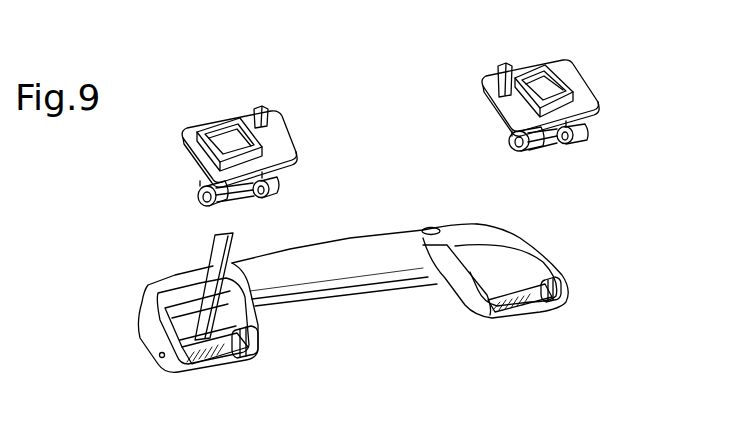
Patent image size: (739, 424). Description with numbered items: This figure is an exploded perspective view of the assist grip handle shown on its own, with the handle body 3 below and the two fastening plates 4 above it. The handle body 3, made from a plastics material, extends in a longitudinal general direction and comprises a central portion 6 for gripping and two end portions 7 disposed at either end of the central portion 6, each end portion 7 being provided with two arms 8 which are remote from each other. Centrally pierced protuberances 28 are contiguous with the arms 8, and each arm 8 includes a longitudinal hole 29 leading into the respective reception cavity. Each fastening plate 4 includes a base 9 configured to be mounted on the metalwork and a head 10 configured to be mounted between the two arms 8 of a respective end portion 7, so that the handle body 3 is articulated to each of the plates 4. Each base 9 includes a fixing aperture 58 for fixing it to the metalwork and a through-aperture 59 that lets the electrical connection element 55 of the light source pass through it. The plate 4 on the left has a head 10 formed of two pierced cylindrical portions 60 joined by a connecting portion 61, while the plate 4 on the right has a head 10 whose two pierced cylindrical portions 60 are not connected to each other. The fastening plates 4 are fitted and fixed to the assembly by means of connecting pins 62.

The handle body 3 is at (598, 240).
The fastening plate 4 is at (292, 116).
The central portion 6 is at (384, 244).
The end portion 7 is at (148, 352).
The arm 8 is at (150, 322).
The base 9 is at (277, 157).
The head 10 is at (277, 187).
The protuberance 28 is at (247, 348).
The longitudinal hole 29 is at (161, 357).
The electrical connection element 55 is at (213, 262).
The fixing aperture 58 is at (233, 113).
The through-aperture 59 is at (240, 165).
The pierced cylindrical portion 60 is at (220, 207).
The connecting portion 61 is at (245, 190).
The connecting pin 62 is at (217, 348).